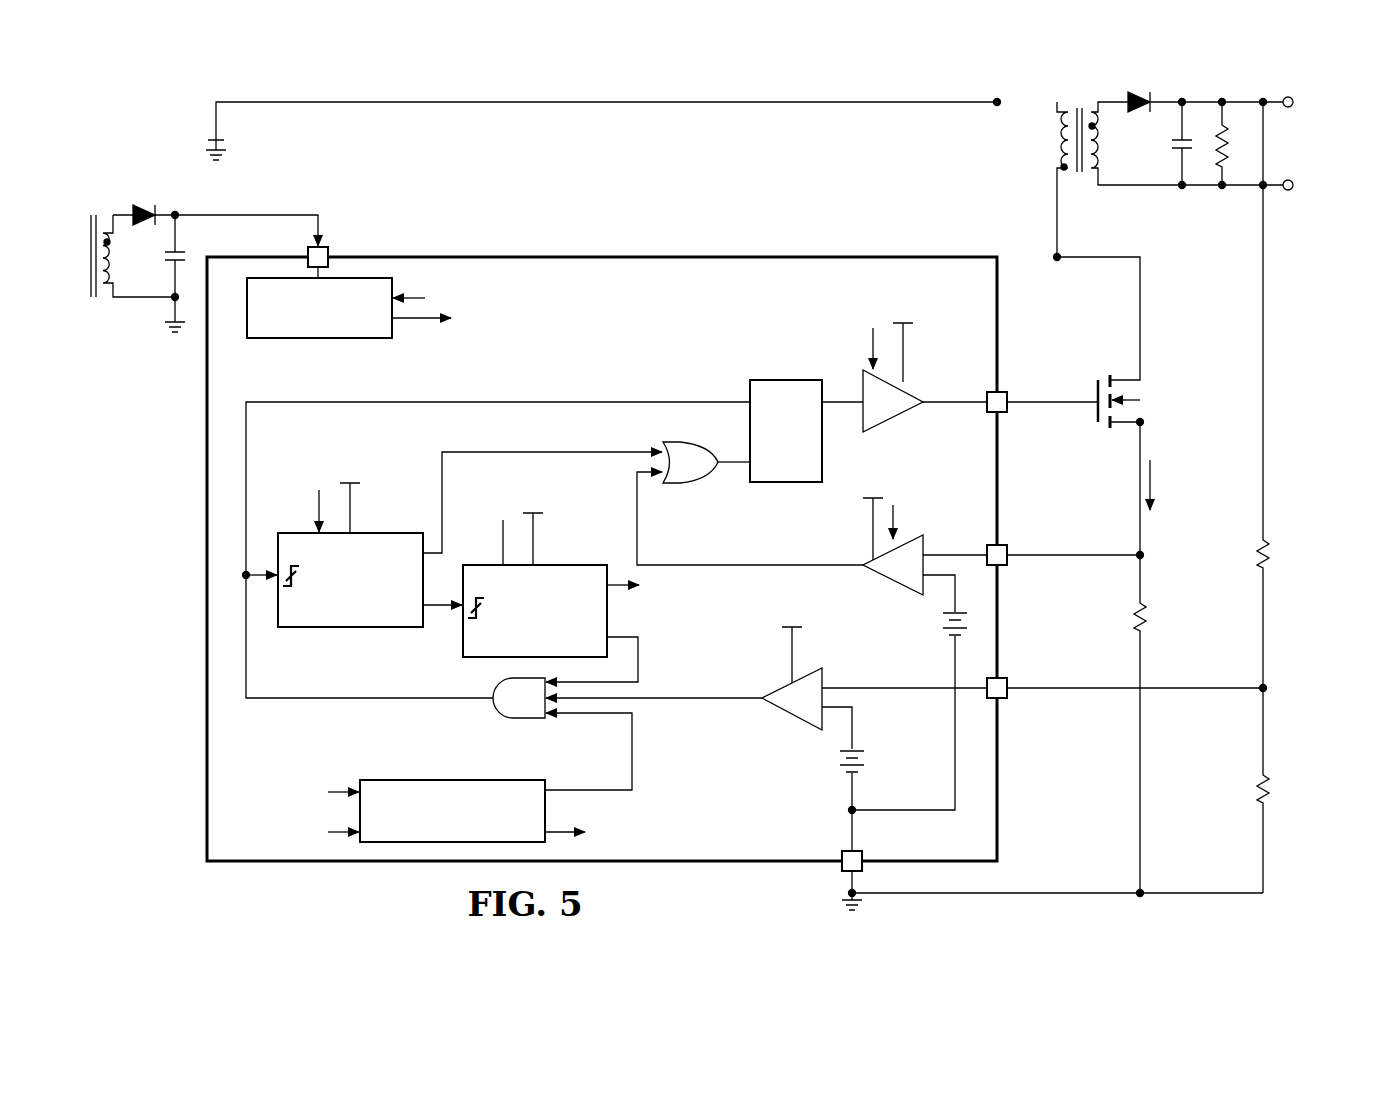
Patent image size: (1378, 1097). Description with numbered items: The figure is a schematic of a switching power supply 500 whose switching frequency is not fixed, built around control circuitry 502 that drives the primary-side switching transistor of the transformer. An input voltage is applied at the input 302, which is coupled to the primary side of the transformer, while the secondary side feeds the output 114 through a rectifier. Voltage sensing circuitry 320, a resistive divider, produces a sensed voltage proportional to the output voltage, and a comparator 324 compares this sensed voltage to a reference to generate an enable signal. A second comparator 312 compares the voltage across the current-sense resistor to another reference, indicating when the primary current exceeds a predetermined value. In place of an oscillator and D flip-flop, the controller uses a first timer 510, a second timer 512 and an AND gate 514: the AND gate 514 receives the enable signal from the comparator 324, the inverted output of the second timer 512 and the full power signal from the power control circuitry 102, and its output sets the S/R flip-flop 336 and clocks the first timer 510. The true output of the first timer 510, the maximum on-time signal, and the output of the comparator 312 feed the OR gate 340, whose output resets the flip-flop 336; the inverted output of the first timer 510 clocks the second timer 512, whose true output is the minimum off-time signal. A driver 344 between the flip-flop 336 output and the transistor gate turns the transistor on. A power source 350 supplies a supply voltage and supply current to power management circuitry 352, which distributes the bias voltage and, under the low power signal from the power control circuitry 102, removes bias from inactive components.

The power supply 500 is at (733, 492).
The control circuitry 502 is at (662, 255).
The input 302 is at (242, 126).
The power source 350 is at (144, 180).
The power management circuitry 352 is at (310, 340).
The S/R flip-flop 336 is at (787, 380).
The driver 344 is at (897, 422).
The OR gate 340 is at (683, 485).
The comparator 312 is at (870, 578).
The comparator 324 is at (773, 690).
The first timer 510 is at (340, 628).
The second timer 512 is at (462, 650).
The AND gate 514 is at (523, 718).
The power control circuitry 102 is at (452, 780).
The output 114 is at (1324, 199).
The voltage sensing circuitry 320 is at (1286, 636).